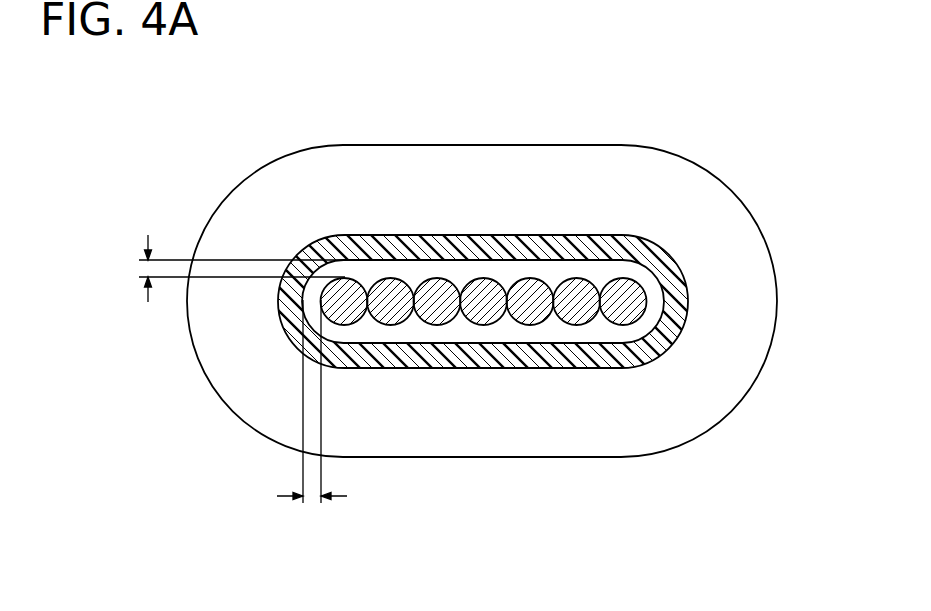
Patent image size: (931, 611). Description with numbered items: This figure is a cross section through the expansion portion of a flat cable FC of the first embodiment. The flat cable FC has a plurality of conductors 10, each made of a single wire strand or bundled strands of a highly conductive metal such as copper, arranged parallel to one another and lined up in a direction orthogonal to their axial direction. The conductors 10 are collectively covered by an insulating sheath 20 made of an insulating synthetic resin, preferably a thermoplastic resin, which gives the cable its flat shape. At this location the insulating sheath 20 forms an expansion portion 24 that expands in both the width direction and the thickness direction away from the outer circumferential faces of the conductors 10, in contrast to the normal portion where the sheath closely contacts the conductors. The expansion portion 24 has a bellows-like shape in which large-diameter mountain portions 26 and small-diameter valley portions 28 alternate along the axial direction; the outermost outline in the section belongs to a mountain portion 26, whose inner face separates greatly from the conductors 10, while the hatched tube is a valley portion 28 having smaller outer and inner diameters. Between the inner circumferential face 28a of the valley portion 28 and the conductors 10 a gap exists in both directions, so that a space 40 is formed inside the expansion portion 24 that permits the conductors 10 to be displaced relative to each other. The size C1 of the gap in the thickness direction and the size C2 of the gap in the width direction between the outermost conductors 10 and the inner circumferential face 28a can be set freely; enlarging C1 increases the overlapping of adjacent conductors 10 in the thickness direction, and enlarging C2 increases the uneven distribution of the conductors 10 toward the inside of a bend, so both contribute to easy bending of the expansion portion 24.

The flat cable FC is at (469, 310).
The insulating sheath 20 is at (501, 345).
The expansion portion 24 is at (735, 166).
The mountain portion 26 is at (738, 240).
The valley portion 28 is at (492, 307).
The inner circumferential face 28a is at (520, 342).
The conductor 10 is at (437, 308).
The space 40 is at (410, 275).
The size of the gap in the thickness direction C1 is at (224, 268).
The size of the gap in the width direction C2 is at (312, 416).